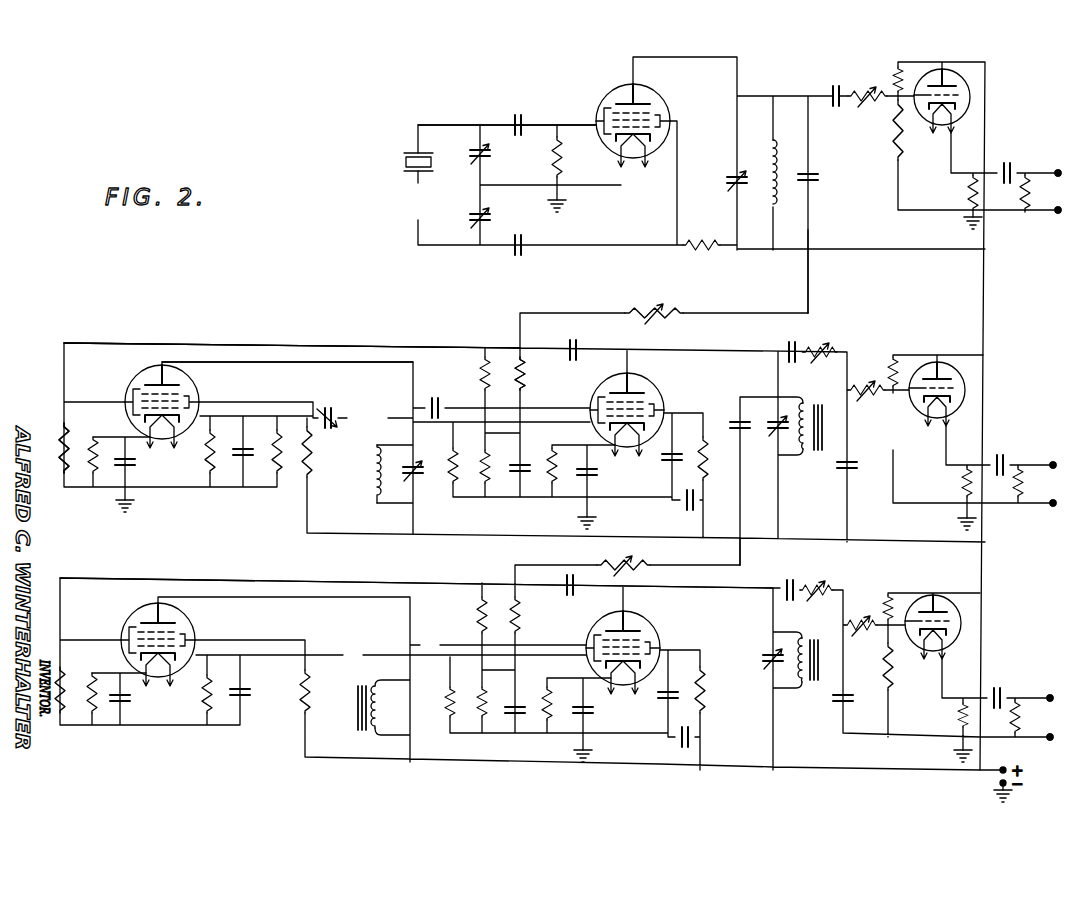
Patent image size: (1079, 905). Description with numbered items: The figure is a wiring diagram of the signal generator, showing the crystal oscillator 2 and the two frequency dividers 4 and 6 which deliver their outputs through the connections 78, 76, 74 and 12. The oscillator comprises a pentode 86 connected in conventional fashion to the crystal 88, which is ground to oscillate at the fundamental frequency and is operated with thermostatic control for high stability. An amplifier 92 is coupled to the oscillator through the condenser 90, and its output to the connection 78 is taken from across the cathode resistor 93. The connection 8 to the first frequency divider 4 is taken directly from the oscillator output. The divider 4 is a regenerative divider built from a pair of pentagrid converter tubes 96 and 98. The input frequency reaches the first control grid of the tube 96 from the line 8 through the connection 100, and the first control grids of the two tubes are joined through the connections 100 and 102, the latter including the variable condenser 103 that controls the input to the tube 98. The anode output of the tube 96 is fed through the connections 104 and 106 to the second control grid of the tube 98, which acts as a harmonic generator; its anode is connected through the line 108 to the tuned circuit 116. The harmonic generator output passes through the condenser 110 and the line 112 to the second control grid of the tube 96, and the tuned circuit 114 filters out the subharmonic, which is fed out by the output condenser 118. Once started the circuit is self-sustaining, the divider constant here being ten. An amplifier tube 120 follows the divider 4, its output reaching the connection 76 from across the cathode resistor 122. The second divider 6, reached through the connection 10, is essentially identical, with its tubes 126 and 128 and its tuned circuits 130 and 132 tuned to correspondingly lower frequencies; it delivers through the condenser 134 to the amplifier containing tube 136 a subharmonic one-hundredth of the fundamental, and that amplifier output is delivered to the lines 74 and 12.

The crystal oscillator 2 is at (768, 79).
The frequency divider 4 is at (351, 327).
The second frequency divider 6 is at (375, 571).
The connection 8 is at (811, 228).
The connection 10 is at (742, 557).
The connection 12 is at (1050, 717).
The line 74 is at (1028, 697).
The connection 76 is at (1042, 464).
The connection 78 is at (1043, 171).
The pentode 86 is at (607, 108).
The crystal 88 is at (434, 162).
The condenser 90 is at (840, 92).
The amplifier 92 is at (970, 93).
The cathode resistor 93 is at (968, 192).
The pentagrid converter tube 96 is at (660, 404).
The pentagrid converter tube 98 is at (128, 376).
The connection 100 is at (560, 428).
The connection 102 is at (430, 433).
The variable condenser 103 is at (325, 411).
The connection 104 is at (384, 348).
The connection 106 is at (68, 415).
The line 108 is at (240, 362).
The condenser 110 is at (440, 401).
The line 112 is at (543, 407).
The tuned circuit 114 is at (796, 397).
The tuned circuit 116 is at (365, 492).
The output condenser 118 is at (796, 347).
The amplifier tube 120 is at (965, 388).
The cathode resistor 122 is at (962, 488).
The tube 126 is at (656, 637).
The tube 128 is at (192, 633).
The tuned circuit 130 is at (793, 704).
The tuned circuit 132 is at (383, 745).
The condenser 134 is at (796, 584).
The tube 136 is at (960, 623).